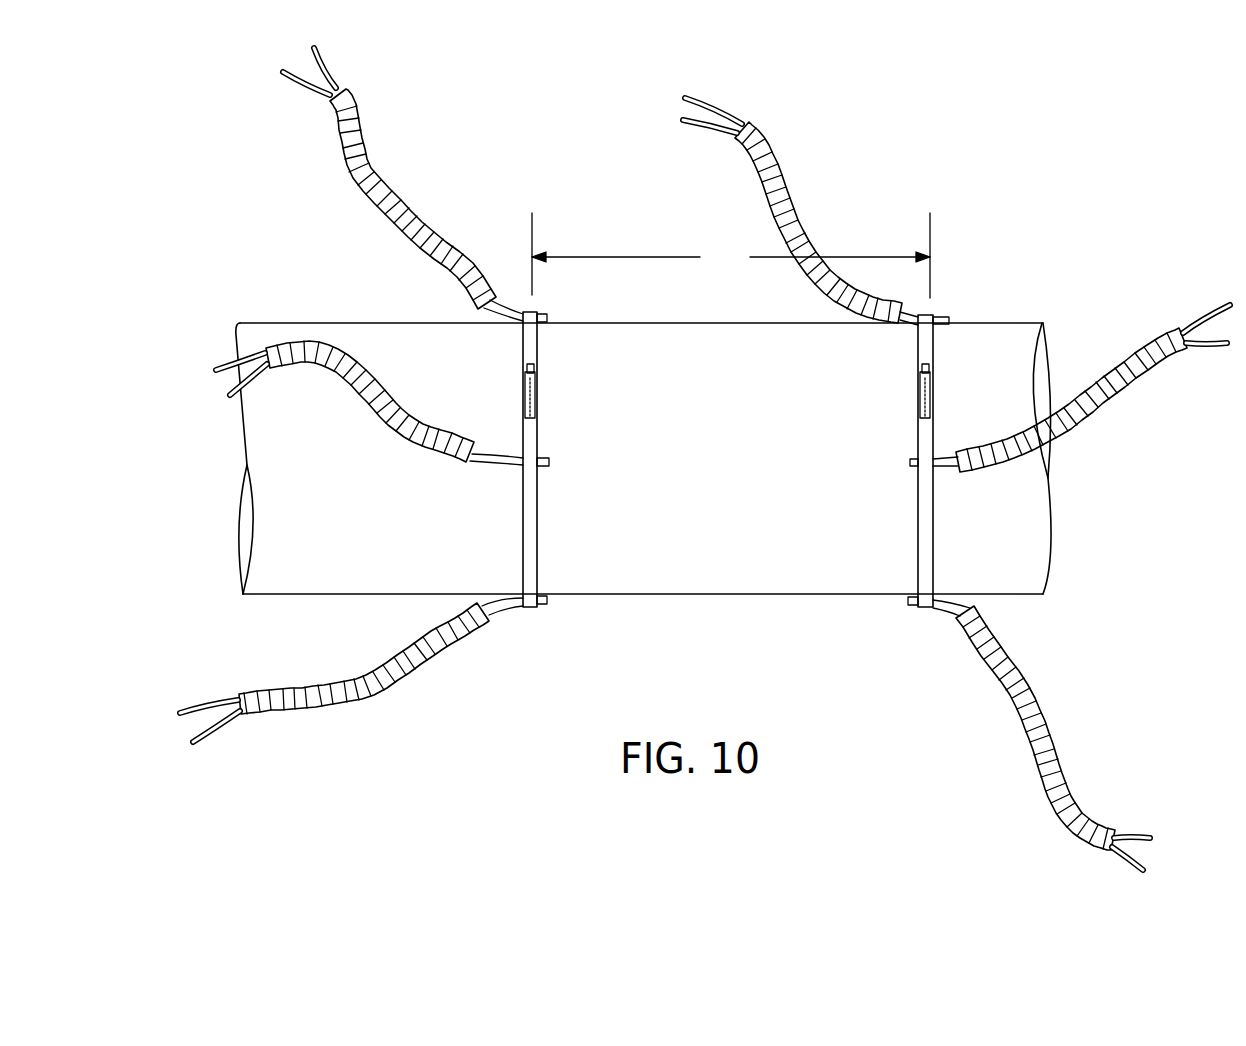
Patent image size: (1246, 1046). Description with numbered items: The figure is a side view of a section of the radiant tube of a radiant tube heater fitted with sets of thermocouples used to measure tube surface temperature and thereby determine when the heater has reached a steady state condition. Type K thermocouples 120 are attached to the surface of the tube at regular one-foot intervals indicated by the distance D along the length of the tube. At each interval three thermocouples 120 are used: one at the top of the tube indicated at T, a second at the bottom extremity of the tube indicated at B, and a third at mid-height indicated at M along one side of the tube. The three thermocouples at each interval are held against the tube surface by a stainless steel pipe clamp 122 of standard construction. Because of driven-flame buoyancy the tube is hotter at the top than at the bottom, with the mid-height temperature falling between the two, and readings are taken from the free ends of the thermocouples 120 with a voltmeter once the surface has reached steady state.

The thermocouple 120 is at (793, 195).
The stainless steel pipe clamp 122 is at (522, 528).
The top of the tube T is at (513, 307).
The mid-height of the tube M is at (508, 457).
The bottom extremity of the tube B is at (522, 603).
The distance between thermocouple sets D is at (731, 255).